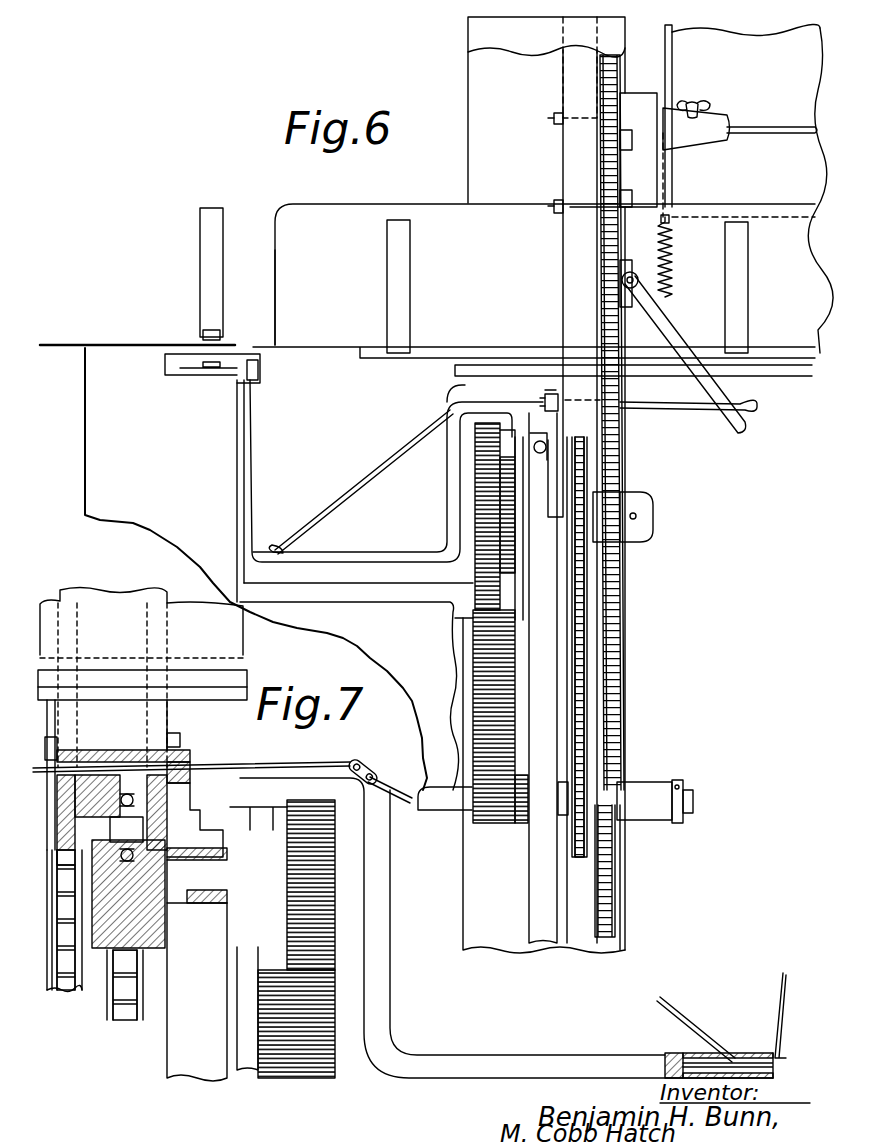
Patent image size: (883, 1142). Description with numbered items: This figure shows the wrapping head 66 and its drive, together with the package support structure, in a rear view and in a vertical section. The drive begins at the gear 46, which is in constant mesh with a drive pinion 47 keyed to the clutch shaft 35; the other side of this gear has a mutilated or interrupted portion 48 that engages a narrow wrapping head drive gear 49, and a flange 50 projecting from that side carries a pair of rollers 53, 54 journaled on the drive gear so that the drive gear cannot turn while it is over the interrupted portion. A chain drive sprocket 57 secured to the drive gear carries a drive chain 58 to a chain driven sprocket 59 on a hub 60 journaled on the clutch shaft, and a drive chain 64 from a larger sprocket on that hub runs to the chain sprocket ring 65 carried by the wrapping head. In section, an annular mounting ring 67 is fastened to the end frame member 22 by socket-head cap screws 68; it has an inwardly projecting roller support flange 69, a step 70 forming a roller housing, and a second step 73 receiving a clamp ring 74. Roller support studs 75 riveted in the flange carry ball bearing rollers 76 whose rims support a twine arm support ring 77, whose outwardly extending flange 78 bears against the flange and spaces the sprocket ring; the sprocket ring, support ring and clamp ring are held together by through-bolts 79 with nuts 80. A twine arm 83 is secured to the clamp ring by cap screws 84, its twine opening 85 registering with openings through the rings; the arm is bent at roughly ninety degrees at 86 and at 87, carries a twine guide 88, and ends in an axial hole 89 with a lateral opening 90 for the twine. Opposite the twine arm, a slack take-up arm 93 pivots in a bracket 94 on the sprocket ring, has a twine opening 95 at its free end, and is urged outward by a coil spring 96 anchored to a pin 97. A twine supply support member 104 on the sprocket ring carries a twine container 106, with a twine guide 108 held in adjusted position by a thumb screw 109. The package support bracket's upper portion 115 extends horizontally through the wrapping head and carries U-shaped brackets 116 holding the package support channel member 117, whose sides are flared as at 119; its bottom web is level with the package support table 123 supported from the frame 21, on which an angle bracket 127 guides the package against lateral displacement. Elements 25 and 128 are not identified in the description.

In FIG. 6, the frame 21 is at (629, 686).
In FIG. 6, the end frame member 22 is at (627, 933).
In FIG. 7, the end frame member 22 is at (197, 1078).
In FIG. 6, the housing 25 is at (348, 602).
In FIG. 6, the clutch shaft 35 is at (428, 812).
In FIG. 6, the gear 46 is at (473, 660).
In FIG. 7, the gear 46 is at (318, 1076).
In FIG. 6, the drive pinion 47 is at (507, 823).
In FIG. 6, the mutilated or interrupted portion 48 is at (478, 405).
In FIG. 7, the mutilated or interrupted portion 48 is at (275, 812).
In FIG. 6, the wrapping head drive gear 49 is at (475, 497).
In FIG. 6, the flange 50 is at (527, 586).
In FIG. 7, the flange 50 is at (233, 832).
In FIG. 6, the roller 53 is at (520, 550).
In FIG. 6, the roller 54 is at (516, 472).
In FIG. 6, the chain drive sprocket 57 is at (593, 468).
In FIG. 6, the drive chain 58 is at (583, 612).
In FIG. 7, the drive chain 58 is at (121, 1012).
In FIG. 6, the chain driven sprocket 59 is at (585, 785).
In FIG. 6, the hub 60 is at (633, 816).
In FIG. 6, the drive chain 64 is at (622, 648).
In FIG. 7, the drive chain 64 is at (60, 995).
In FIG. 7, the chain sprocket ring 65 is at (57, 822).
In FIG. 6, the wrapping head 66 is at (570, 78).
In FIG. 7, the wrapping head 66 is at (135, 748).
In FIG. 7, the annular mounting ring 67 is at (75, 990).
In FIG. 7, the socket-head cap screws 68 is at (197, 838).
In FIG. 7, the roller support flange 69 is at (95, 865).
In FIG. 7, the step 70 is at (128, 880).
In FIG. 7, the second step 73 is at (160, 912).
In FIG. 7, the clamp ring 74 is at (155, 797).
In FIG. 7, the roller support studs 75 is at (126, 829).
In FIG. 7, the ball bearing roller 76 is at (124, 770).
In FIG. 7, the twine arm support ring 77 is at (95, 752).
In FIG. 7, the outwardly extending flange 78 is at (57, 797).
In FIG. 6, the through-bolts 79 is at (548, 118).
In FIG. 7, the through-bolts 79 is at (180, 740).
In FIG. 7, the nuts 80 is at (57, 745).
In FIG. 6, the twine arm 83 is at (447, 471).
In FIG. 7, the twine arm 83 is at (320, 763).
In FIG. 6, the cap screws 84 is at (545, 400).
In FIG. 7, the twine opening 85 is at (192, 758).
In FIG. 6, the bend 86 is at (447, 412).
In FIG. 7, the bend 86 is at (381, 777).
In FIG. 6, the bend 87 is at (440, 548).
In FIG. 7, the bend 87 is at (407, 1046).
In FIG. 7, the twine guide 88 is at (367, 764).
In FIG. 7, the axial hole 89 is at (668, 1055).
In FIG. 6, the lateral opening 90 is at (284, 550).
In FIG. 7, the lateral opening 90 is at (718, 1055).
In FIG. 6, the arm 93 is at (668, 338).
In FIG. 6, the bracket 94 is at (632, 272).
In FIG. 6, the twine opening 95 is at (757, 406).
In FIG. 6, the coil spring 96 is at (672, 266).
In FIG. 6, the pin 97 is at (635, 227).
In FIG. 6, the twine supply support member 104 is at (658, 92).
In FIG. 6, the twine container 106 is at (778, 63).
In FIG. 6, the twine guide 108 is at (757, 128).
In FIG. 6, the thumb screw 109 is at (700, 104).
In FIG. 6, the upper portion 115 is at (420, 360).
In FIG. 7, the upper portion 115 is at (197, 700).
In FIG. 6, the U-shaped brackets 116 is at (410, 300).
In FIG. 6, the package support channel member 117 is at (430, 216).
In FIG. 7, the package support channel member 117 is at (105, 638).
In FIG. 6, the flared side 119 is at (283, 297).
In FIG. 6, the package support table 123 is at (115, 343).
In FIG. 6, the angle bracket 127 is at (200, 240).
In FIG. 6, the bracket 128 is at (261, 374).